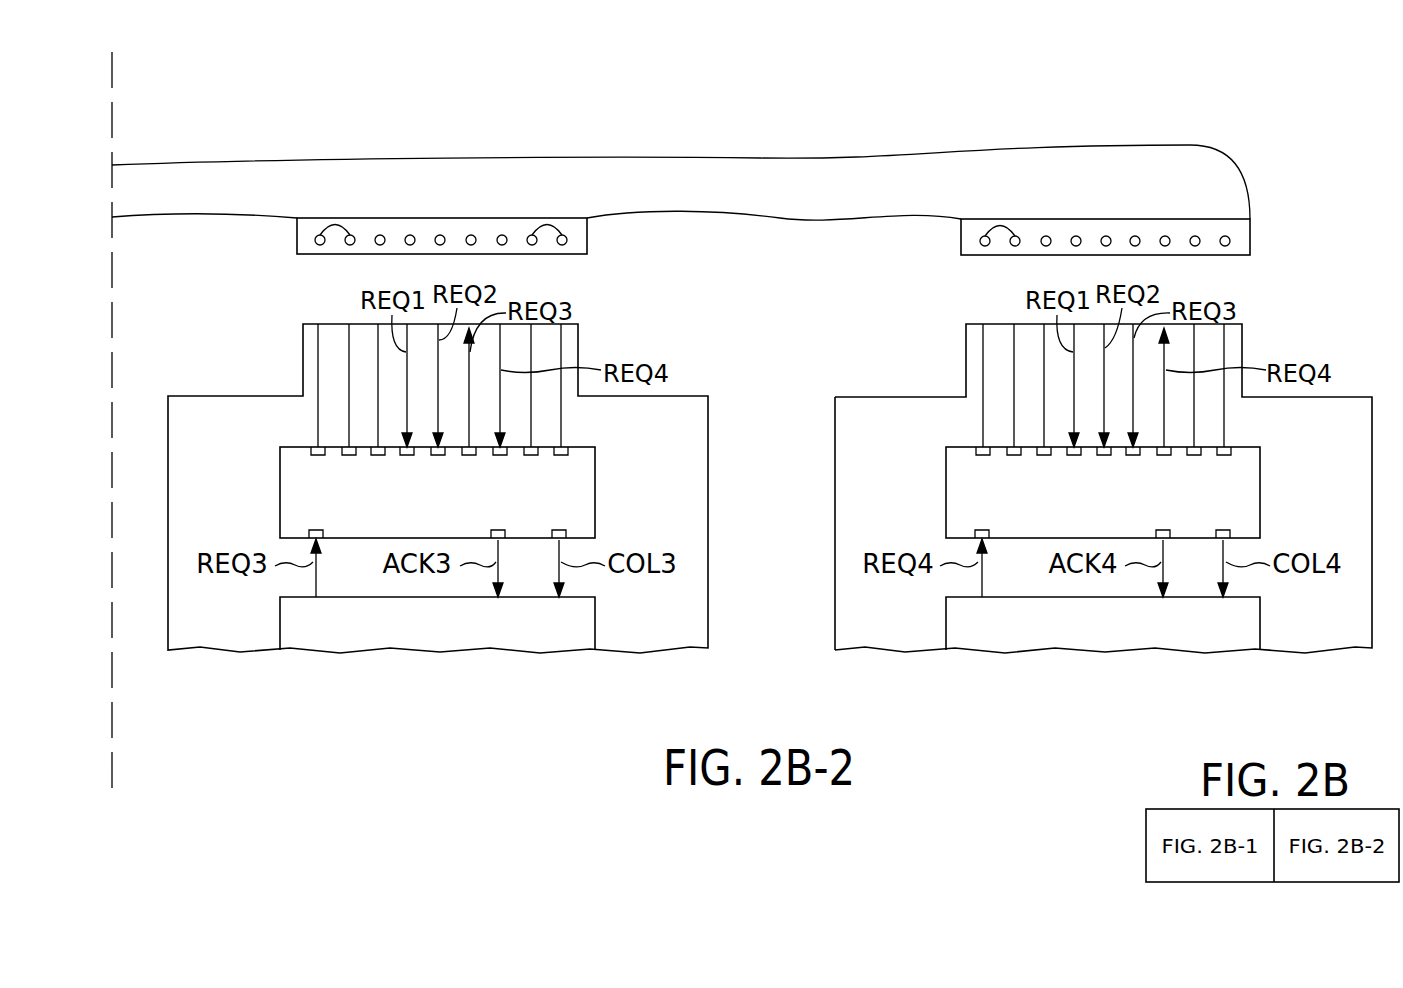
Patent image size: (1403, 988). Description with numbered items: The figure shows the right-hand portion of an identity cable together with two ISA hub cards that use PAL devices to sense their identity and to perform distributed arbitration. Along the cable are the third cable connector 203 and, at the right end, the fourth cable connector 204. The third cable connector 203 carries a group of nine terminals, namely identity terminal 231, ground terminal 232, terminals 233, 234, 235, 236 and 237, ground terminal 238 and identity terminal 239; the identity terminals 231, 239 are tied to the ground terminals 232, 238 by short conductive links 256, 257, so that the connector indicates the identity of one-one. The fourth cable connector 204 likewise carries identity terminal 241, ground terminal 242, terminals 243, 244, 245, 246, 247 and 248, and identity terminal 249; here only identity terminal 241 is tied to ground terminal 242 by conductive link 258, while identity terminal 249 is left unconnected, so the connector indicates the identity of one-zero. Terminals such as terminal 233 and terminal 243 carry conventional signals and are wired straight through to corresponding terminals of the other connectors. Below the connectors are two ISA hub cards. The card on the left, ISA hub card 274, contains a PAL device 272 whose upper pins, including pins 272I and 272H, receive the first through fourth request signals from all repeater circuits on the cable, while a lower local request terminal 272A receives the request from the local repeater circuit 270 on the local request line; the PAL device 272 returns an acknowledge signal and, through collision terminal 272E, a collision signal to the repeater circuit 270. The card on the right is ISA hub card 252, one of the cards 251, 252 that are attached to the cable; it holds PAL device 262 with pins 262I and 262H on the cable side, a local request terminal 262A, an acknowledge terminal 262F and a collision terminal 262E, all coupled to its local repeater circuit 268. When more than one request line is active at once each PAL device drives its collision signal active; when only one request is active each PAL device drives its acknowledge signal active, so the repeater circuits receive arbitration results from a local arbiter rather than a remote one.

The third cable connector 203 is at (307, 254).
The fourth cable connector 204 is at (972, 255).
The identity terminal 231 is at (316, 237).
The ground terminal 232 is at (350, 235).
The terminal 233 is at (380, 235).
The terminal 234 is at (410, 245).
The terminal 235 is at (440, 245).
The terminal 236 is at (471, 235).
The terminal 237 is at (502, 235).
The ground terminal 238 is at (535, 233).
The identity terminal 239 is at (566, 237).
The identity terminal 241 is at (981, 238).
The ground terminal 242 is at (1015, 236).
The terminal 243 is at (1046, 236).
The terminal 244 is at (1076, 246).
The terminal 245 is at (1106, 246).
The terminal 246 is at (1135, 236).
The terminal 247 is at (1165, 236).
The terminal 248 is at (1195, 246).
The identity terminal 249 is at (1230, 241).
The ISA hub card 251 is at (835, 500).
The ISA hub card 252 is at (875, 635).
The conductive link 256 is at (336, 224).
The conductive link 257 is at (548, 224).
The conductive link 258 is at (1001, 225).
The PAL device 262 is at (947, 488).
The local request terminal 262A is at (992, 530).
The collision terminal 262E is at (1235, 530).
The acknowledge terminal 262F is at (1162, 528).
The PAL I.C. pin 262H is at (1232, 456).
The PAL I.C. pin 262I is at (979, 445).
The repeater circuit 268 is at (1097, 650).
The repeater circuit 270 is at (432, 650).
The PAL device 272 is at (282, 488).
The local request terminal 272A is at (327, 530).
The collision terminal 272E is at (570, 530).
The PAL I.C. pin 272H is at (567, 456).
The PAL I.C. pin 272I is at (314, 445).
The ISA hub card 274 is at (210, 635).